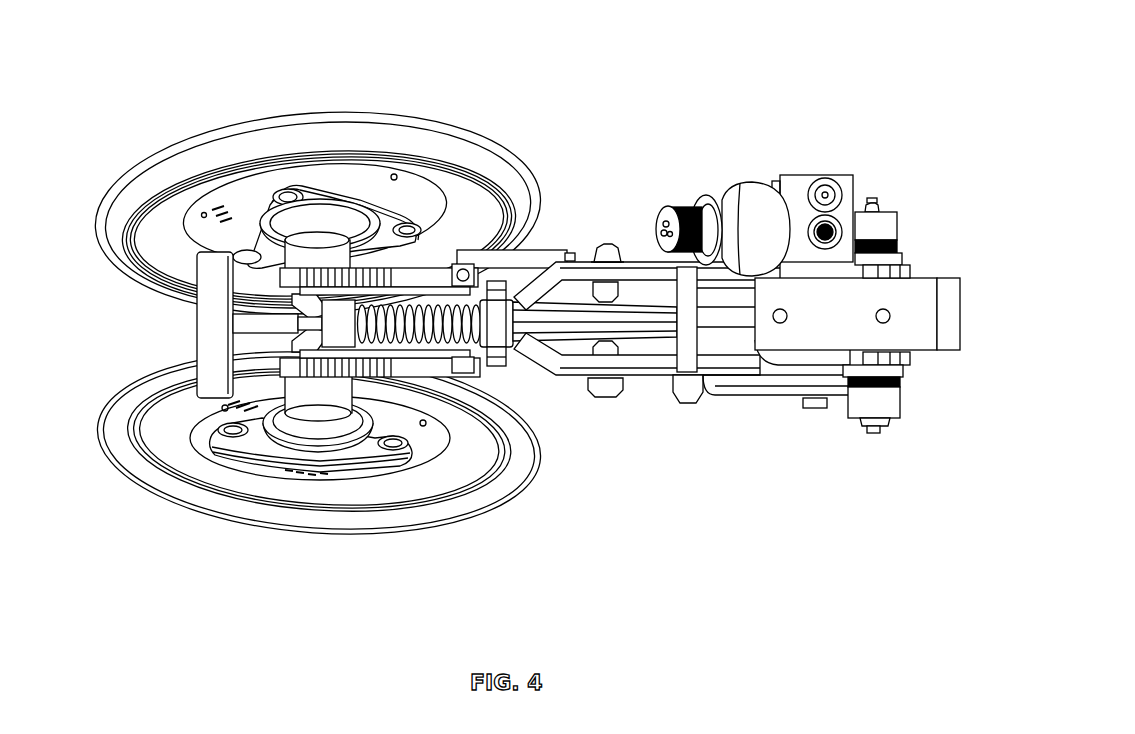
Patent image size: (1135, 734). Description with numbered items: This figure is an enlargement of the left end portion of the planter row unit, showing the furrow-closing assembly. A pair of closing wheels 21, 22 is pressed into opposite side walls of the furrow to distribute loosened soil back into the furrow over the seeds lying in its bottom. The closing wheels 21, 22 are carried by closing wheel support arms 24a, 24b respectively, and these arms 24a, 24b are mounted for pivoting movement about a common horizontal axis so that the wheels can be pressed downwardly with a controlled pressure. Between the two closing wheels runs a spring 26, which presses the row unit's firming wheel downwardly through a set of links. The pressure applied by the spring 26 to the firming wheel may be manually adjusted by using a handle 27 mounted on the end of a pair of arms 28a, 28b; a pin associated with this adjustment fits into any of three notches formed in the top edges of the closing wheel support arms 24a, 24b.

The closing wheel 21 is at (295, 533).
The closing wheel 22 is at (333, 108).
The closing wheel support arm 24a is at (520, 378).
The closing wheel support arm 24b is at (427, 277).
The spring 26 is at (462, 348).
The handle 27 is at (197, 328).
The arm 28a is at (220, 352).
The arm 28b is at (220, 305).